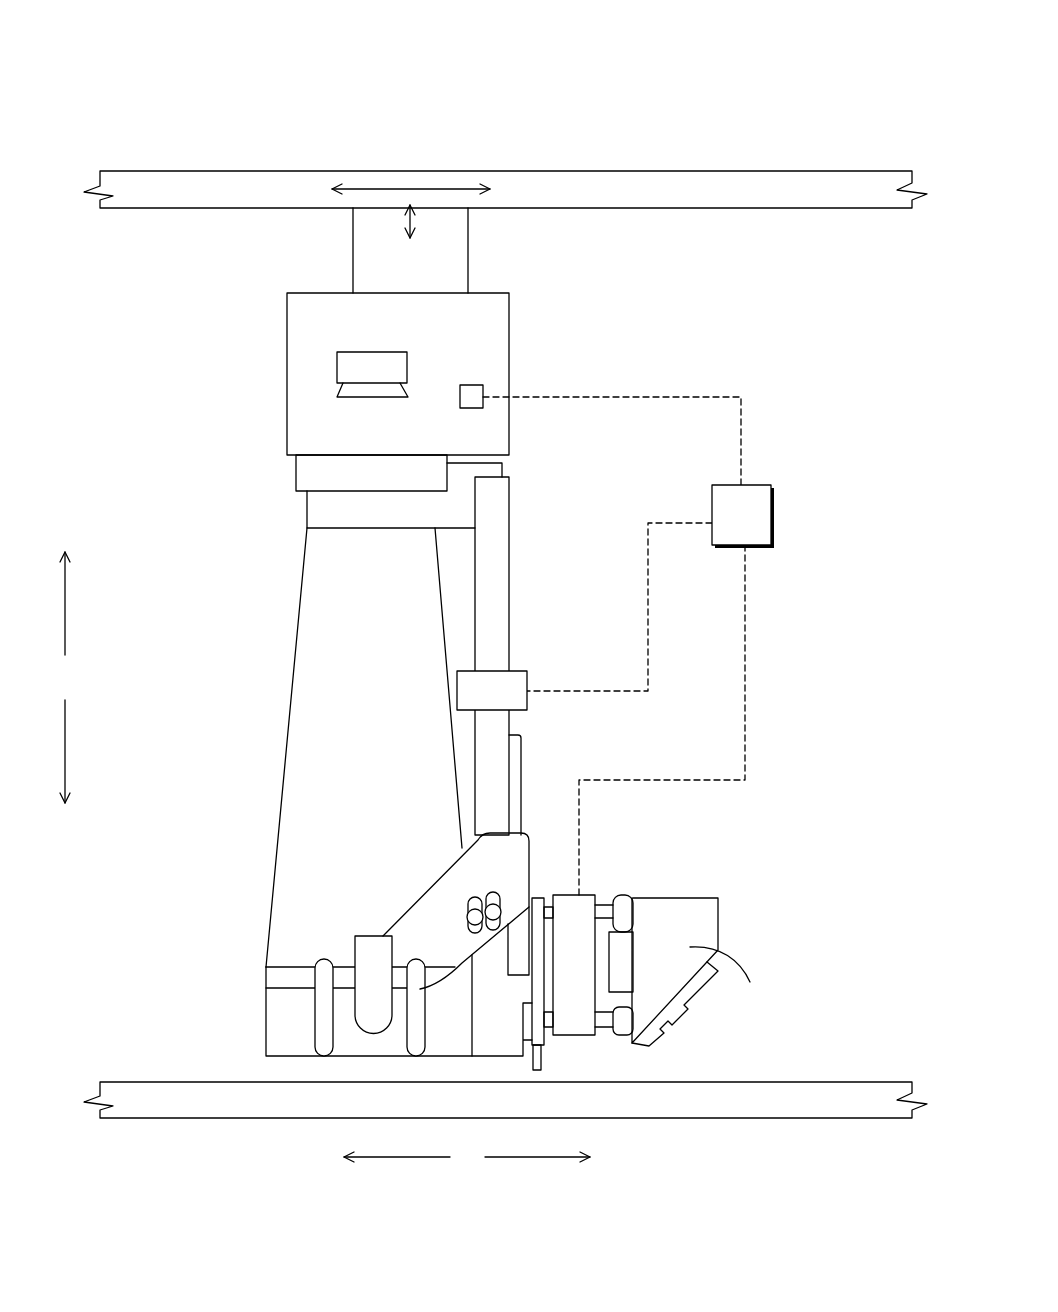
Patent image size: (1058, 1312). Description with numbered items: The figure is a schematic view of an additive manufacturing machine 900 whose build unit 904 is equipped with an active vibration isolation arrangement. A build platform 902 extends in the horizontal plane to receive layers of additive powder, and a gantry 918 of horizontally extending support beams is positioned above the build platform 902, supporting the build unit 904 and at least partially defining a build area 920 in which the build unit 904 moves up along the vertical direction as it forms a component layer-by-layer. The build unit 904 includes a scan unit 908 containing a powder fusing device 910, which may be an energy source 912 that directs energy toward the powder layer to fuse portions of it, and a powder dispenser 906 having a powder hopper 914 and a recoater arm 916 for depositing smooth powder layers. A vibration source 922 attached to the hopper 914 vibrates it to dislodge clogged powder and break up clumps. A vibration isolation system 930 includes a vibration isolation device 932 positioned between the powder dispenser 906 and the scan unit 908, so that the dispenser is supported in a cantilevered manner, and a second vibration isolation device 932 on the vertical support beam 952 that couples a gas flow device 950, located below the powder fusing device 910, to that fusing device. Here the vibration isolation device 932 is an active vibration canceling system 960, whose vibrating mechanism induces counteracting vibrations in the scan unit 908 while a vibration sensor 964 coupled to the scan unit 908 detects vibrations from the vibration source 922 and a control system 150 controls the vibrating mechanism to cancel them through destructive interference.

The additive manufacturing machine 900 is at (805, 62).
The build platform 902 is at (483, 1111).
The build unit 904 is at (185, 443).
The powder dispenser 906 is at (724, 927).
The scan unit 908 is at (286, 365).
The powder fusing device 910 is at (363, 348).
The energy source 912 is at (395, 362).
The powder hopper 914 is at (737, 971).
The recoater arm 916 is at (543, 1057).
The gantry 918 is at (695, 203).
The build area 920 is at (853, 280).
The vibration source 922 is at (692, 1003).
The vibration isolation system 930 is at (644, 851).
The vibration isolation device 932 is at (522, 658).
The gas flow device 950 is at (297, 1010).
The vertical support beam 952 is at (497, 567).
The active vibration canceling system 960 is at (800, 446).
The vibration sensor 964 is at (478, 388).
The control system 150 is at (758, 529).